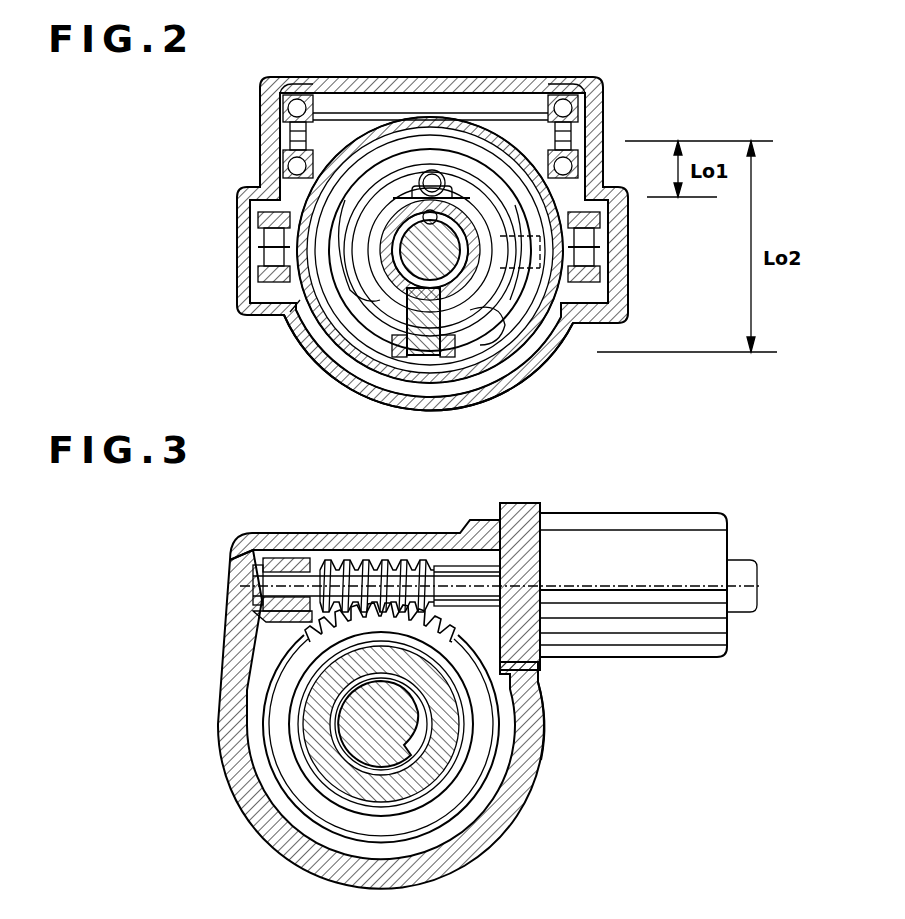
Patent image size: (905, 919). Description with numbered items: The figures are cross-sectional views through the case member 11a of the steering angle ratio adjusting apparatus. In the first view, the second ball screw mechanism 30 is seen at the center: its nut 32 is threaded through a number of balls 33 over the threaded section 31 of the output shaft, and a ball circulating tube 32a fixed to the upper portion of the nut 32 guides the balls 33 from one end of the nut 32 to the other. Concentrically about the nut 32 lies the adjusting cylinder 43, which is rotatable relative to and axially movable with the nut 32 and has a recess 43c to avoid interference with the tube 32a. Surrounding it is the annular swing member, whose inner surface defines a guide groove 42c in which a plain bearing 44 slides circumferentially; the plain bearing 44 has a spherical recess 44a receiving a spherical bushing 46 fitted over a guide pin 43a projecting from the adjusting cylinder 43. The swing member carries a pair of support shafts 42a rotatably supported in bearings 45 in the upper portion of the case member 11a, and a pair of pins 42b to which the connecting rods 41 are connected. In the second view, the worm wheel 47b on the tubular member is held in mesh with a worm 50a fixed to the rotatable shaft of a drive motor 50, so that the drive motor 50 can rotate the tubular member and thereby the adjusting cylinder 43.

In FIG. 2, the second ball screw mechanism 30 is at (535, 395).
In FIG. 2, the threaded section of the output shaft 31 is at (370, 388).
In FIG. 3, the threaded section of the output shaft 31 is at (268, 832).
In FIG. 2, the nut 32 is at (545, 352).
In FIG. 2, the ball circulating tube 32a is at (495, 195).
In FIG. 2, the balls 33 is at (428, 172).
In FIG. 2, the connecting rods 41 is at (245, 187).
In FIG. 2, the support shafts 42a is at (295, 140).
In FIG. 2, the pins 42b is at (270, 250).
In FIG. 2, the guide groove 42c is at (540, 385).
In FIG. 2, the adjusting cylinder 43 is at (340, 378).
In FIG. 3, the adjusting cylinder 43 is at (330, 862).
In FIG. 2, the guide pin 43a is at (532, 105).
In FIG. 2, the recess 43c is at (298, 322).
In FIG. 2, the plain bearing 44 is at (408, 395).
In FIG. 2, the spherical recess 44a is at (445, 392).
In FIG. 2, the bearings 45 is at (290, 92).
In FIG. 2, the bushing 46 is at (495, 380).
In FIG. 3, the drive motor 50 is at (634, 532).
In FIG. 3, the worm 50a is at (372, 562).
In FIG. 3, the worm wheel 47b is at (530, 735).
In FIG. 3, the case member 11a is at (488, 830).